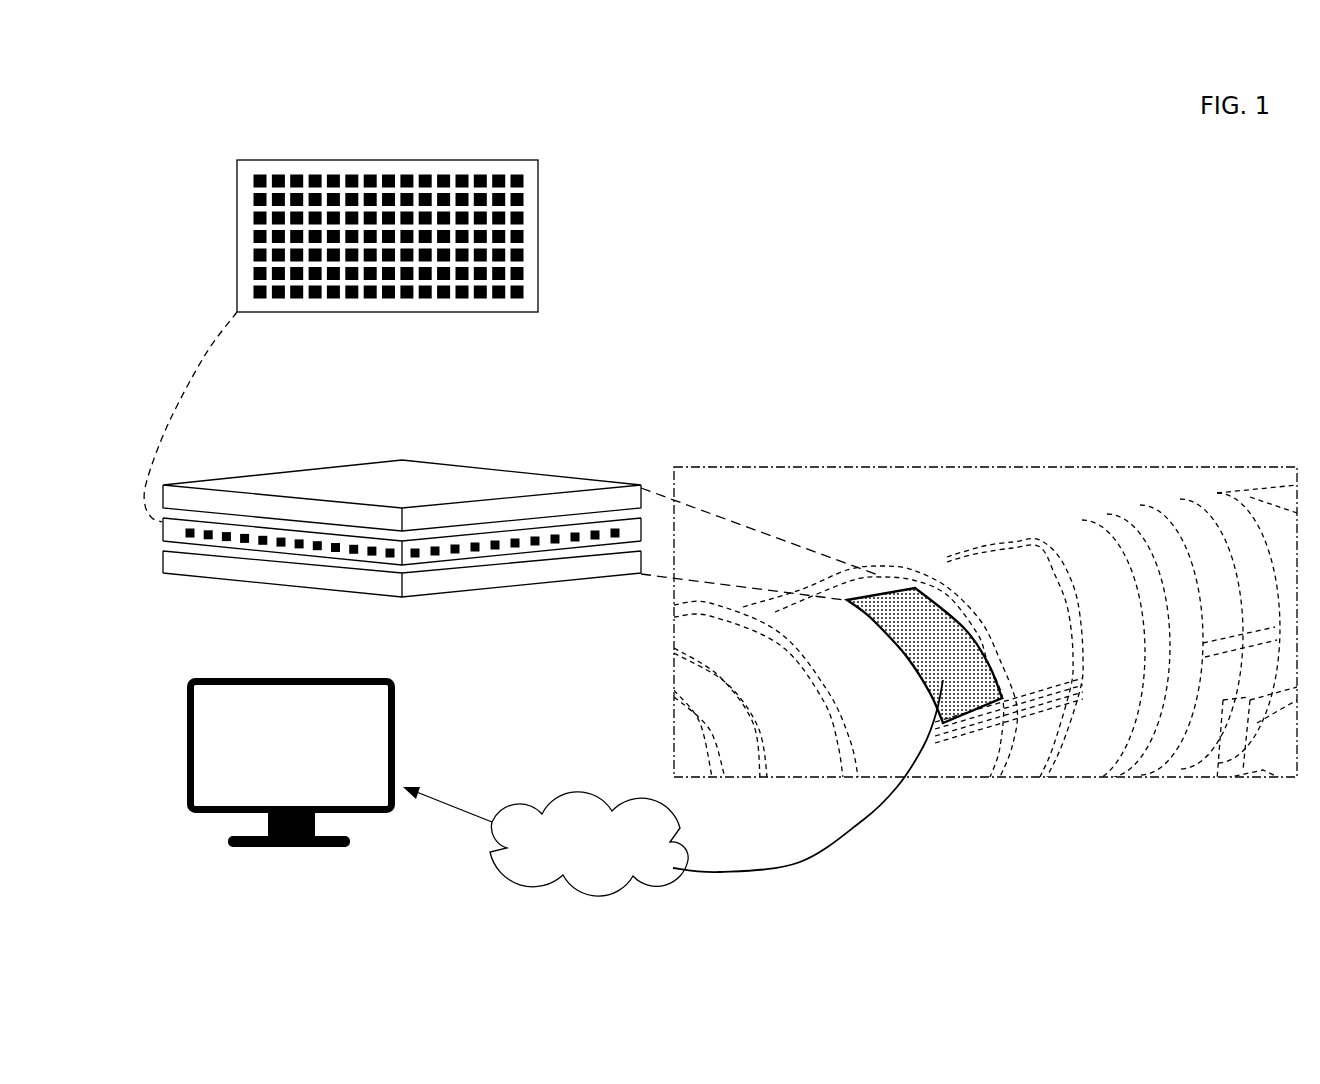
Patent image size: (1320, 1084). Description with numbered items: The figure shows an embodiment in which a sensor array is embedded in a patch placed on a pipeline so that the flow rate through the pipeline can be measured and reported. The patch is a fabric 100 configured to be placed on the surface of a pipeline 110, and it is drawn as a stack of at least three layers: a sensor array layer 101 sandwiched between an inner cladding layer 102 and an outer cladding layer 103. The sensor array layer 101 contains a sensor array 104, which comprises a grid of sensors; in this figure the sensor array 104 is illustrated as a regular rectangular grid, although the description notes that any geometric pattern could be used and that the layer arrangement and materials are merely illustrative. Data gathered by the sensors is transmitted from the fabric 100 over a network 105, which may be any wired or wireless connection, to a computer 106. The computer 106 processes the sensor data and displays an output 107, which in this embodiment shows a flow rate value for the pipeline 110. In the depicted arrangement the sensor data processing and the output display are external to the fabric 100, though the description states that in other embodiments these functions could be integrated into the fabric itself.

The fabric 100 is at (977, 687).
The sensor array layer 101 is at (172, 533).
The inner cladding layer 102 is at (223, 569).
The outer cladding layer 103 is at (205, 503).
The sensor array 104 is at (235, 200).
The network 105 is at (492, 858).
The computer 106 is at (187, 740).
The output 107 is at (350, 745).
The pipeline 110 is at (697, 752).